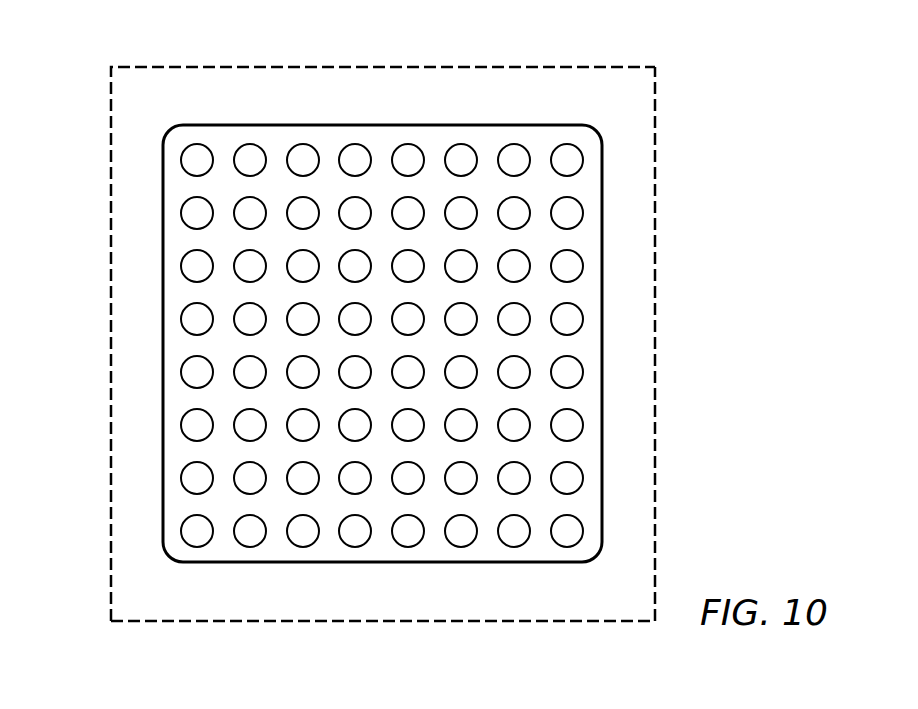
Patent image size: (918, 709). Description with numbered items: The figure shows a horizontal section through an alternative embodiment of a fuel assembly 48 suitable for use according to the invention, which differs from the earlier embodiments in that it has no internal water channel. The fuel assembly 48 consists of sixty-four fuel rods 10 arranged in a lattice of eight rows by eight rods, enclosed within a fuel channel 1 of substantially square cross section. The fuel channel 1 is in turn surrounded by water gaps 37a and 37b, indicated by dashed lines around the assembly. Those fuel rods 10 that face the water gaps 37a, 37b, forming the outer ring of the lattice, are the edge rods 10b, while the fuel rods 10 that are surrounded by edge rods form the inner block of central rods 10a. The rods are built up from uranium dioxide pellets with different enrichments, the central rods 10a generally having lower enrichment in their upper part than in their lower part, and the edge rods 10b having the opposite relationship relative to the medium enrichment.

The fuel channel 1 is at (603, 265).
The fuel rods 10 is at (523, 202).
The central rods 10a is at (382, 345).
The edge rods 10b is at (382, 345).
The water gap 37a is at (413, 87).
The water gap 37b is at (402, 600).
The fuel assembly 48 is at (616, 300).